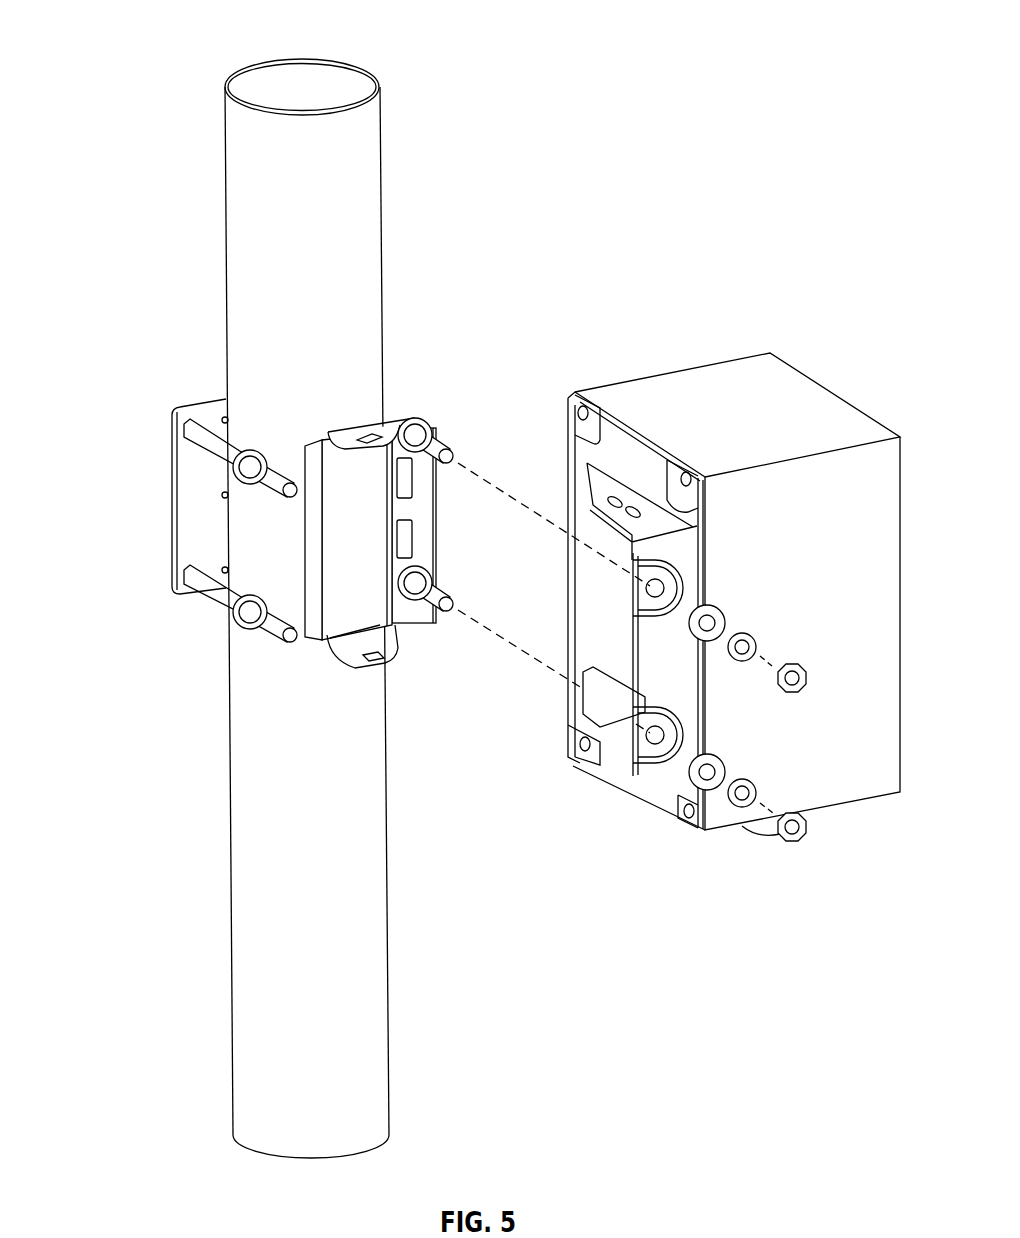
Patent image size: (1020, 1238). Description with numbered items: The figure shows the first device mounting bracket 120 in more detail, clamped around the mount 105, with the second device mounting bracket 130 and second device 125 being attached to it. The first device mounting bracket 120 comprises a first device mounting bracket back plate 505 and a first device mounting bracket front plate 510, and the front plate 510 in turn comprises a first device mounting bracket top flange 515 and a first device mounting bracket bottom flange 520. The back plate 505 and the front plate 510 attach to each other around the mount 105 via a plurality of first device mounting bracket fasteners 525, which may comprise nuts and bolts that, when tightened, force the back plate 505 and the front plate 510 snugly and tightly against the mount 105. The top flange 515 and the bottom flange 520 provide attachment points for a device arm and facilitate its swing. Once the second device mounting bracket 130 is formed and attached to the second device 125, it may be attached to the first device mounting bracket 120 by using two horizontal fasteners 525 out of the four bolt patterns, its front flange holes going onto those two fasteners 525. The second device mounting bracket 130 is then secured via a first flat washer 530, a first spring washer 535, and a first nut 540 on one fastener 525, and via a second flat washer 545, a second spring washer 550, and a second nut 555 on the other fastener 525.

The mount 105 is at (223, 173).
The first device mounting bracket 120 is at (136, 514).
The second device 125 is at (817, 403).
The second device mounting bracket 130 is at (638, 452).
The first device mounting bracket back plate 505 is at (172, 462).
The first device mounting bracket front plate 510 is at (245, 528).
The first device mounting bracket top flange 515 is at (366, 432).
The first device mounting bracket bottom flange 520 is at (400, 656).
The first device mounting bracket fasteners 525 is at (275, 478).
The first flat washer 530 is at (725, 611).
The first spring washer 535 is at (758, 641).
The first nut 540 is at (806, 677).
The second flat washer 545 is at (728, 761).
The second spring washer 550 is at (760, 789).
The second nut 555 is at (808, 829).